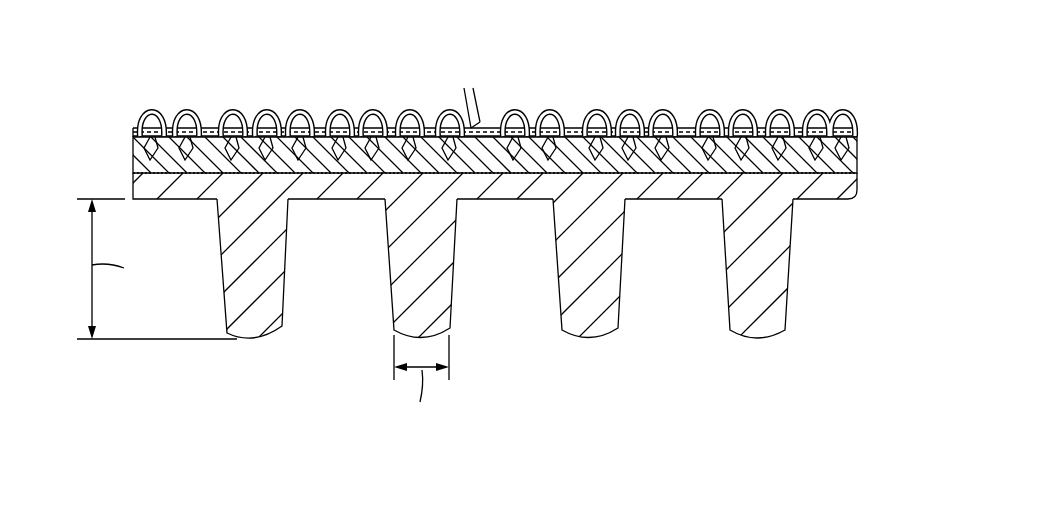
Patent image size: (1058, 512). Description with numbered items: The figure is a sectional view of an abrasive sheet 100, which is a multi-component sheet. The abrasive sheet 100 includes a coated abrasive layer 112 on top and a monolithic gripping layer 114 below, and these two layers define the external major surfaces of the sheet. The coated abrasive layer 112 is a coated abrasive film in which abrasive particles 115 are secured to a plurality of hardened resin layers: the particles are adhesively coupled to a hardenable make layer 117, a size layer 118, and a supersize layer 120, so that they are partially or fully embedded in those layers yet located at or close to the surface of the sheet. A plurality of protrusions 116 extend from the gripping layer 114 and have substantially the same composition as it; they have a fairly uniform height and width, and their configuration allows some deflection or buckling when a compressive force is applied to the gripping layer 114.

The abrasive sheet 100 is at (775, 68).
The coated abrasive layer 112 is at (866, 113).
The gripping layer 114 is at (835, 199).
The abrasive particles 115 is at (469, 93).
The protrusions 116 is at (745, 327).
The make layer 117 is at (140, 163).
The size layer 118 is at (133, 135).
The supersize layer 120 is at (178, 112).